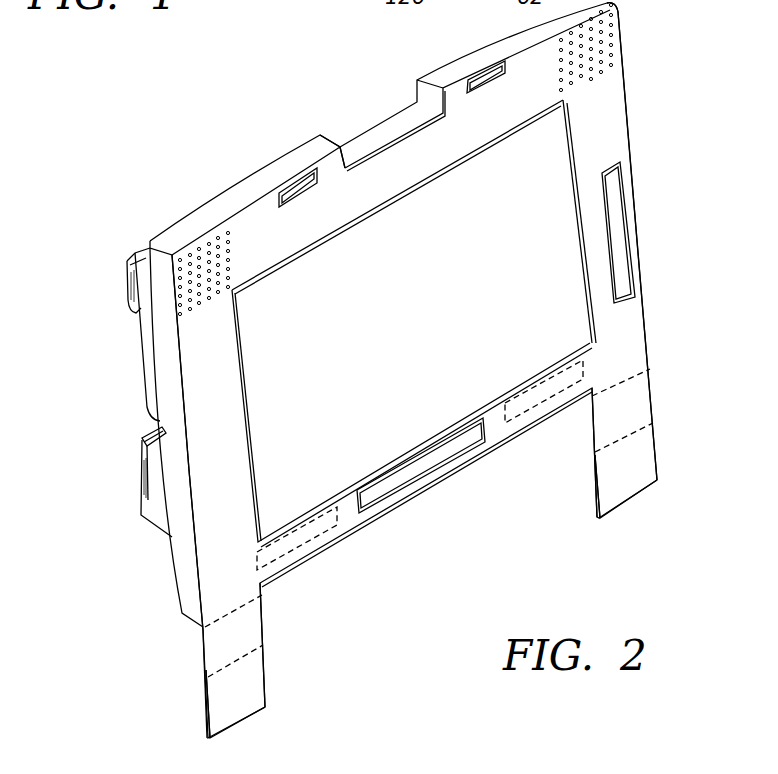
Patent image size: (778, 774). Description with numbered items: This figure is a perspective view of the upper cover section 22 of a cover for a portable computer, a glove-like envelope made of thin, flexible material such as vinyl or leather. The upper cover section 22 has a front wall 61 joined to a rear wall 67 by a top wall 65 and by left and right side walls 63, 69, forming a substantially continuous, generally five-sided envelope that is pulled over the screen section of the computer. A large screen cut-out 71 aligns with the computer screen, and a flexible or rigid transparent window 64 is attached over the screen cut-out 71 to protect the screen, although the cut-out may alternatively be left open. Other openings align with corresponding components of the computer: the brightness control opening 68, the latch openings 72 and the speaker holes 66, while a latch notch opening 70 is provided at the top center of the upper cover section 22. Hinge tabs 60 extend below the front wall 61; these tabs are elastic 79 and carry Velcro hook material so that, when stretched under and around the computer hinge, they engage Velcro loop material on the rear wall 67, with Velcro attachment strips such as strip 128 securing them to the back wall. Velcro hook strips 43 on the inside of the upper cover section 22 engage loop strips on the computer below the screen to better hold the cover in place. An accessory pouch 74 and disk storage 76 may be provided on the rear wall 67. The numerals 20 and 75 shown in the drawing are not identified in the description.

The display base assembly 20 is at (142, 679).
The upper cover section 22 is at (102, 539).
The Velcro hook strips 43 is at (322, 520).
The hinge tabs 60 is at (638, 462).
The front wall 61 is at (233, 620).
The left side wall 63 is at (185, 561).
The transparent window 64 is at (290, 364).
The top wall 65 is at (223, 203).
The speaker holes 66 is at (598, 60).
The rear wall 67 is at (378, 134).
The brightness control opening 68 is at (616, 222).
The right side wall 69 is at (622, 108).
The latch notch opening 70 is at (334, 136).
The screen cut-out 71 is at (536, 318).
The latch openings 72 is at (481, 82).
The accessory pouch 74 is at (155, 507).
The perforations 75 is at (600, 31).
The disk storage 76 is at (135, 336).
The elastic 79 is at (252, 637).
The Velcro attachment strip 128 is at (592, 482).